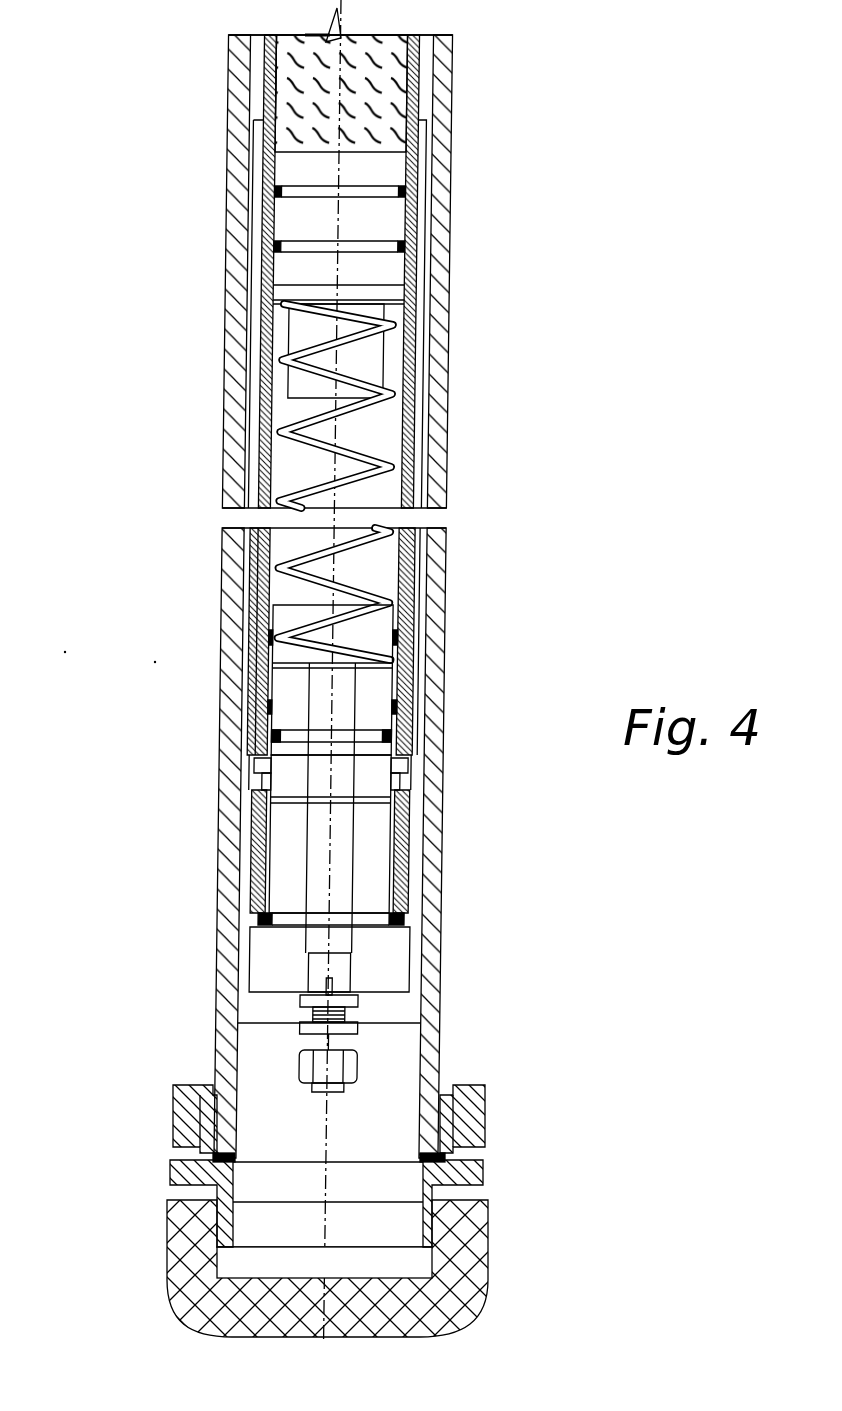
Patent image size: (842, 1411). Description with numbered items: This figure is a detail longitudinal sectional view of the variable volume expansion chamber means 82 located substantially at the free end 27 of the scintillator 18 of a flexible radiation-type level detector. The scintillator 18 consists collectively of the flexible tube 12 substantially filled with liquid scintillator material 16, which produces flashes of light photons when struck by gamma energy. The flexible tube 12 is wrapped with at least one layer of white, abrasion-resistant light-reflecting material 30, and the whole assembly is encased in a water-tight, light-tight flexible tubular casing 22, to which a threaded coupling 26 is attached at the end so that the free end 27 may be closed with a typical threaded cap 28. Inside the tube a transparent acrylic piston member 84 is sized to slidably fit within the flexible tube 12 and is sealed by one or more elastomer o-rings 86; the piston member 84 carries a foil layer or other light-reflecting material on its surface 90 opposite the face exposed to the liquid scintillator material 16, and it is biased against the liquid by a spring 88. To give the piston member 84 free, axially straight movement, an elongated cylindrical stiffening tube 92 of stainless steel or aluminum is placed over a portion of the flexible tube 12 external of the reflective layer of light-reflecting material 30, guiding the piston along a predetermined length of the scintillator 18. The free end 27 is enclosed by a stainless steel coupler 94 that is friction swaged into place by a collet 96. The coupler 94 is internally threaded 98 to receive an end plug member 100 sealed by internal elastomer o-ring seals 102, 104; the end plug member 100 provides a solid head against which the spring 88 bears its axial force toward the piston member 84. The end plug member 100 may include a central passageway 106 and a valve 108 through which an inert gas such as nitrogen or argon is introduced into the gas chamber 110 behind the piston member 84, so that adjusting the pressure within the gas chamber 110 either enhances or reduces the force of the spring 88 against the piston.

The flexible tube 12 is at (432, 58).
The liquid scintillator material 16 is at (266, 50).
The scintillator 18 is at (557, 133).
The flexible tubular casing 22 is at (447, 197).
The threaded coupling 26 is at (528, 1119).
The free end 27 is at (644, 1184).
The threaded cap 28 is at (472, 1280).
The light-reflecting material 30 is at (423, 97).
The variable volume expansion chamber means 82 is at (496, 446).
The piston member 84 is at (392, 276).
The elastomer o-rings 86 is at (270, 246).
The spring 88 is at (388, 398).
The piston surface 90 is at (290, 272).
The cylindrical stiffening tube 92 is at (426, 488).
The coupler 94 is at (413, 763).
The collet 96 is at (416, 668).
The internal threads 98 is at (386, 840).
The end plug member 100 is at (386, 967).
The internal elastomer o-ring seal 102 is at (266, 918).
The internal elastomer o-ring seal 104 is at (260, 720).
The central passageway 106 is at (320, 848).
The valve 108 is at (360, 1066).
The gas chamber 110 is at (262, 458).